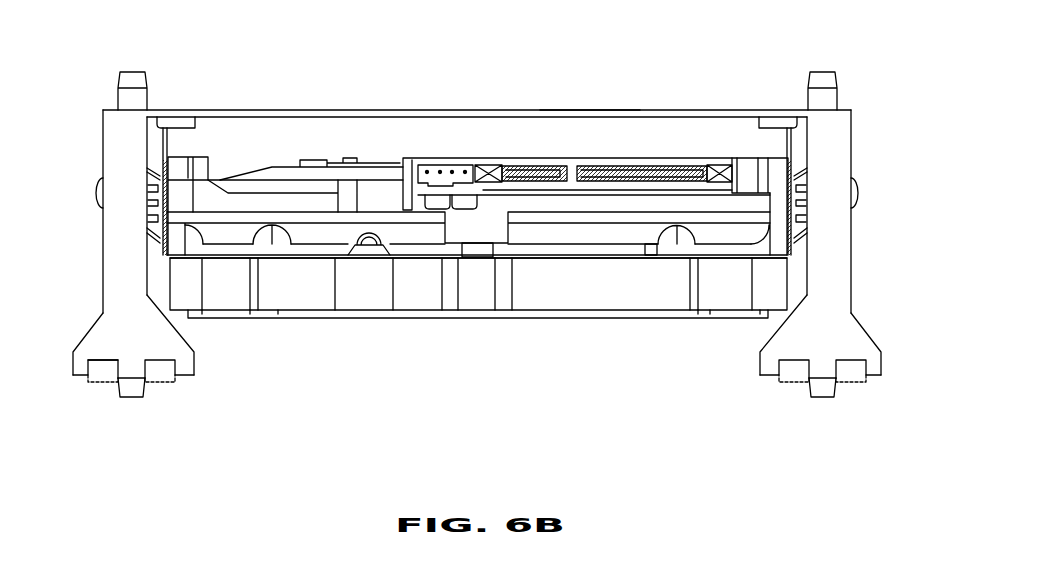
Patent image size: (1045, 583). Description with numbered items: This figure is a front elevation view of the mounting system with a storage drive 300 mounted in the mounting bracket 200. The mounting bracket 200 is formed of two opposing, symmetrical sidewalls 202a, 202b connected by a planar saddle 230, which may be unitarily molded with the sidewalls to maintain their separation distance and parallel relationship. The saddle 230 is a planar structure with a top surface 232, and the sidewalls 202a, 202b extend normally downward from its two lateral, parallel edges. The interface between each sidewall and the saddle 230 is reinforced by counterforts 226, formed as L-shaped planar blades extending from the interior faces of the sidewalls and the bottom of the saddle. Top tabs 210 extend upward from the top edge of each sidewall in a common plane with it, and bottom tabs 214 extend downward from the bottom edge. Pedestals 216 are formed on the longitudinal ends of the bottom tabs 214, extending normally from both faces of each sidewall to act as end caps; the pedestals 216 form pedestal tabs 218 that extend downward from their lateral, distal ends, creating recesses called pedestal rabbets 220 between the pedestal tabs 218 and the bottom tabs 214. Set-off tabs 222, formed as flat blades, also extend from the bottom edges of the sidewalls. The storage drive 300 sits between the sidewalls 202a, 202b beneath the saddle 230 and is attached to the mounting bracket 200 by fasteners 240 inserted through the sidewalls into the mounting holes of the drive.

The mounting bracket 200 is at (510, 110).
The sidewall 202a is at (103, 167).
The sidewall 202b is at (851, 163).
The top tab 210 is at (135, 72).
The bottom tab 214 is at (133, 392).
The pedestal 216 is at (90, 332).
The pedestal tab 218 is at (80, 378).
The pedestal rabbet 220 is at (103, 388).
The set-off tab 222 is at (162, 383).
The counterfort 226 is at (177, 125).
The saddle 230 is at (380, 110).
The top surface 232 is at (587, 105).
The fastener 240 is at (100, 196).
The storage drive 300 is at (420, 312).